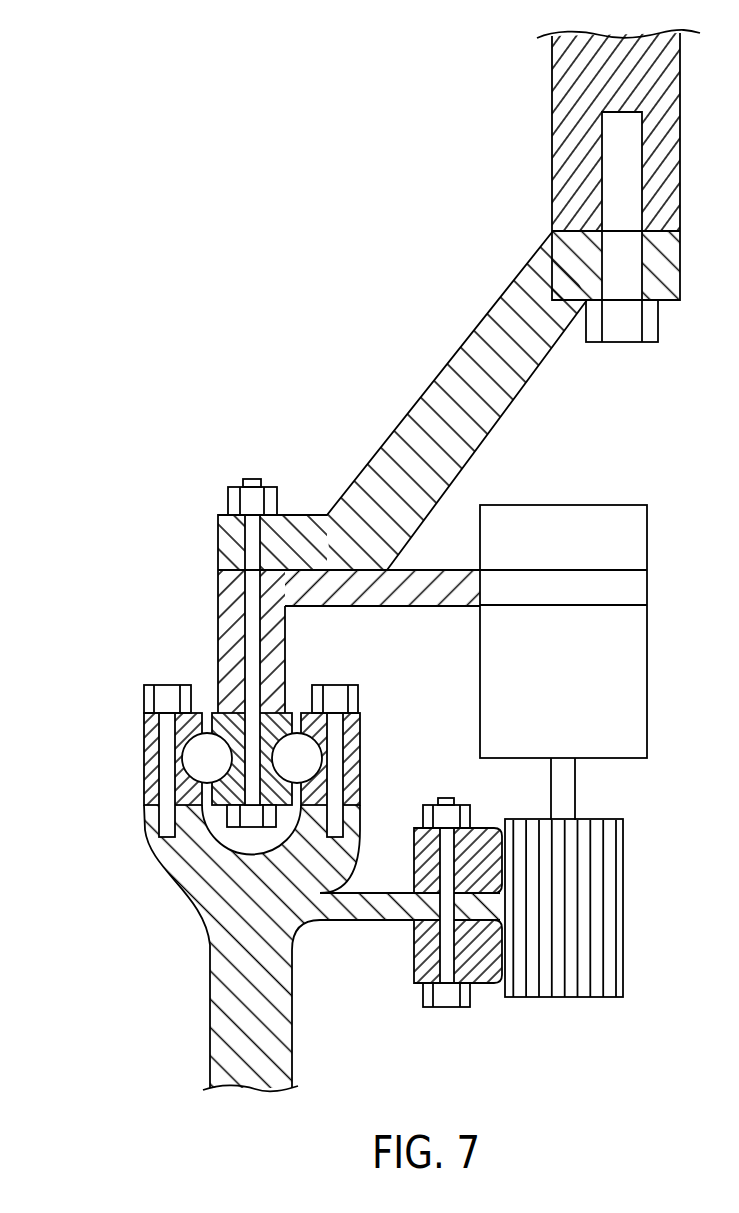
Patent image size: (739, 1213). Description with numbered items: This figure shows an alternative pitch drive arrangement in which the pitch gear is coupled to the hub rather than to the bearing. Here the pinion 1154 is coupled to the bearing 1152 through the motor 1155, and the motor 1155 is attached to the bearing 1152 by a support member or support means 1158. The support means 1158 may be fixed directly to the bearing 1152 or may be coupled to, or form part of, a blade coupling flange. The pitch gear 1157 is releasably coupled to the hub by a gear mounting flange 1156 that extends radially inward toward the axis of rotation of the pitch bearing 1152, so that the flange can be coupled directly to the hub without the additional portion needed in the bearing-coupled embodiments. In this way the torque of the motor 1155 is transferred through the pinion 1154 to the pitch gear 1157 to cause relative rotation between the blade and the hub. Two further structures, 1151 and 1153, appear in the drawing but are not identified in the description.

The base 1151 is at (230, 973).
The bearing 1152 is at (116, 731).
The mounting block 1153 is at (565, 97).
The pinion 1154 is at (612, 906).
The motor 1155 is at (632, 660).
The gear mounting flange 1156 is at (376, 907).
The pitch gear 1157 is at (480, 975).
The support member 1158 is at (335, 582).